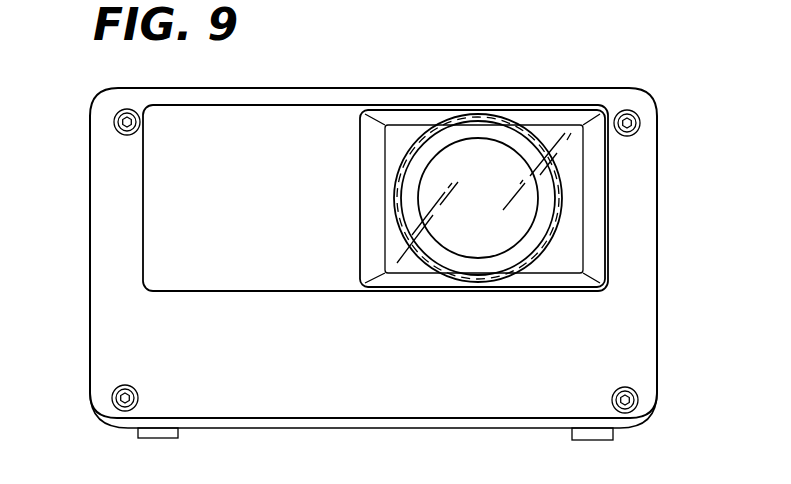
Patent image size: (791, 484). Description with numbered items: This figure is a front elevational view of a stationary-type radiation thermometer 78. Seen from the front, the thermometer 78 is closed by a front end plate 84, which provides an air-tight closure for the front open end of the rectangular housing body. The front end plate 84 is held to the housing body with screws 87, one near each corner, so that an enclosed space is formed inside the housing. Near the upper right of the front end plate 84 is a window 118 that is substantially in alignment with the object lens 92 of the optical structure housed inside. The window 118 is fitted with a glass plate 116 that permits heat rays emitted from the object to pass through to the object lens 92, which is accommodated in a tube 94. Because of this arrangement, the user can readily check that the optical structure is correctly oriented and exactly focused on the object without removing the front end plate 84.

The radiation thermometer 78 is at (649, 88).
The front end plate 84 is at (100, 352).
The screws 87 is at (113, 121).
The object lens 92 is at (460, 240).
The tube 94 is at (539, 257).
The glass plate 116 is at (568, 262).
The window 118 is at (384, 226).